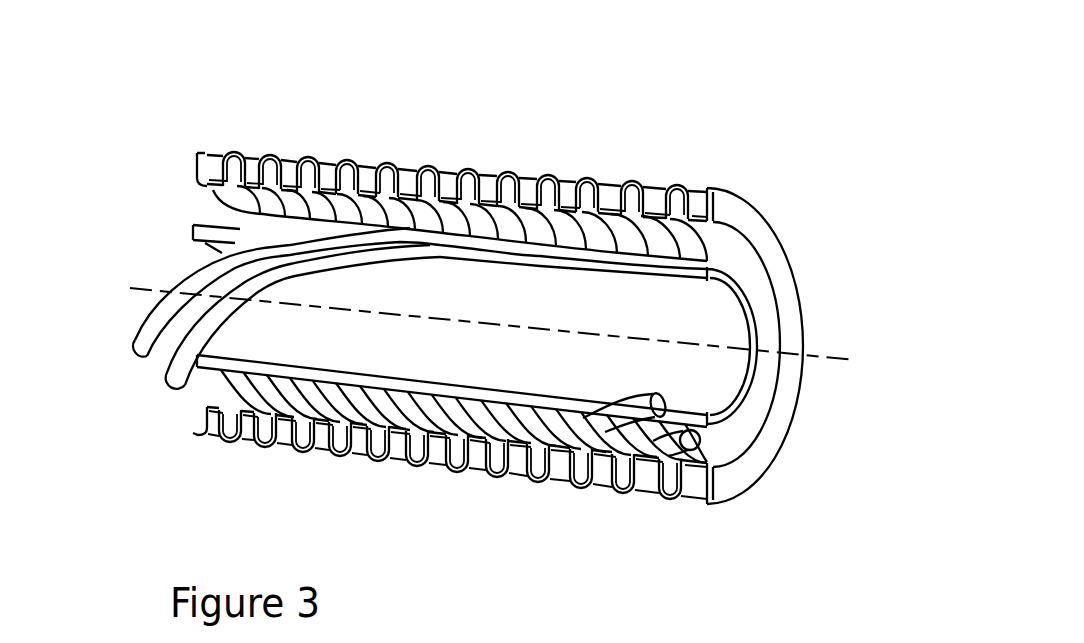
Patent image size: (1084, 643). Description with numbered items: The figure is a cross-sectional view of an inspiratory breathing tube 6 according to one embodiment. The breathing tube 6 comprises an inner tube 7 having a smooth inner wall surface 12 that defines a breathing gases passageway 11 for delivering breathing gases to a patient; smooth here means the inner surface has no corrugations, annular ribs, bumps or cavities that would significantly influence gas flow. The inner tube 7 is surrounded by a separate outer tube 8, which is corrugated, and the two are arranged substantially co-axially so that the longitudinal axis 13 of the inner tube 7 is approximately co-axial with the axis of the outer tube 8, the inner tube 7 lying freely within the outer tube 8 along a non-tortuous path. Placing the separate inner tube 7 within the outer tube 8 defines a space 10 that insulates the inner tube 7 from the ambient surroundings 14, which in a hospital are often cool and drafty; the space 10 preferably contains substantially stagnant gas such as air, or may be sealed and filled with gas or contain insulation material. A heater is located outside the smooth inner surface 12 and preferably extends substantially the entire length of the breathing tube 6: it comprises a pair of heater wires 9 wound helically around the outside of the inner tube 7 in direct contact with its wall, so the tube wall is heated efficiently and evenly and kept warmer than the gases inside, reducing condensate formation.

The breathing tube 6 is at (272, 496).
The inner tube 7 is at (478, 250).
The outer tube 8 is at (400, 173).
The heater wires 9 is at (273, 275).
The space 10 is at (679, 243).
The breathing gases passageway 11 is at (457, 352).
The smooth inner wall surface 12 is at (350, 370).
The longitudinal axis 13 is at (820, 366).
The ambient surroundings 14 is at (838, 118).